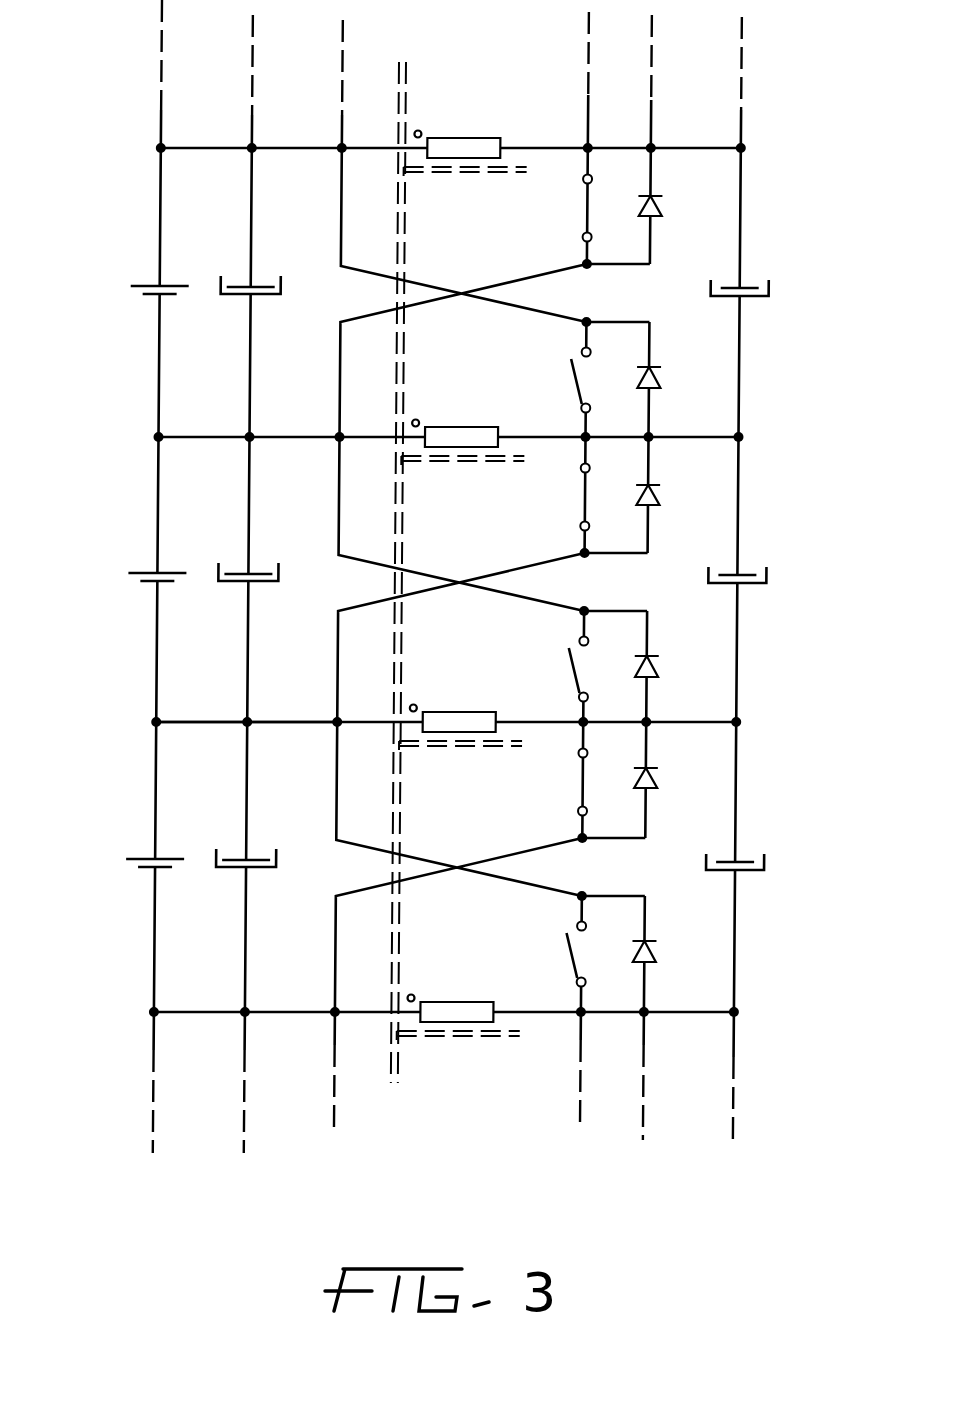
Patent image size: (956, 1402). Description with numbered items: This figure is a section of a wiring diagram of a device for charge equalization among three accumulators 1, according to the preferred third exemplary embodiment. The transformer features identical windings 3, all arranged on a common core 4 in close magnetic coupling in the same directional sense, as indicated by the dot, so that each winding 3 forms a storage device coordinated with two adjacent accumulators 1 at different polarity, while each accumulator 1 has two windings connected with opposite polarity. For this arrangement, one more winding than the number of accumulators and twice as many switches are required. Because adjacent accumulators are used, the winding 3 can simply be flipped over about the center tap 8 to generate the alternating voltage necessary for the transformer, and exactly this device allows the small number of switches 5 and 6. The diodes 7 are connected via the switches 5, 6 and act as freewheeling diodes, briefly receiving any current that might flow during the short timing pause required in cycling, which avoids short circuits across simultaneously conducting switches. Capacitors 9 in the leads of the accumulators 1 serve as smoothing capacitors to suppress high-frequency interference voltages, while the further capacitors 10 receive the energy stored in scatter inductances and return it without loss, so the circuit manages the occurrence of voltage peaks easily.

The accumulator 1 is at (152, 300).
The winding 3 is at (471, 138).
The common core 4 is at (449, 750).
The switch 5 is at (591, 204).
The switch 6 is at (577, 376).
The diode 7 is at (665, 210).
The center tap 8 is at (208, 720).
The capacitor 9 is at (260, 297).
The capacitor 10 is at (755, 287).